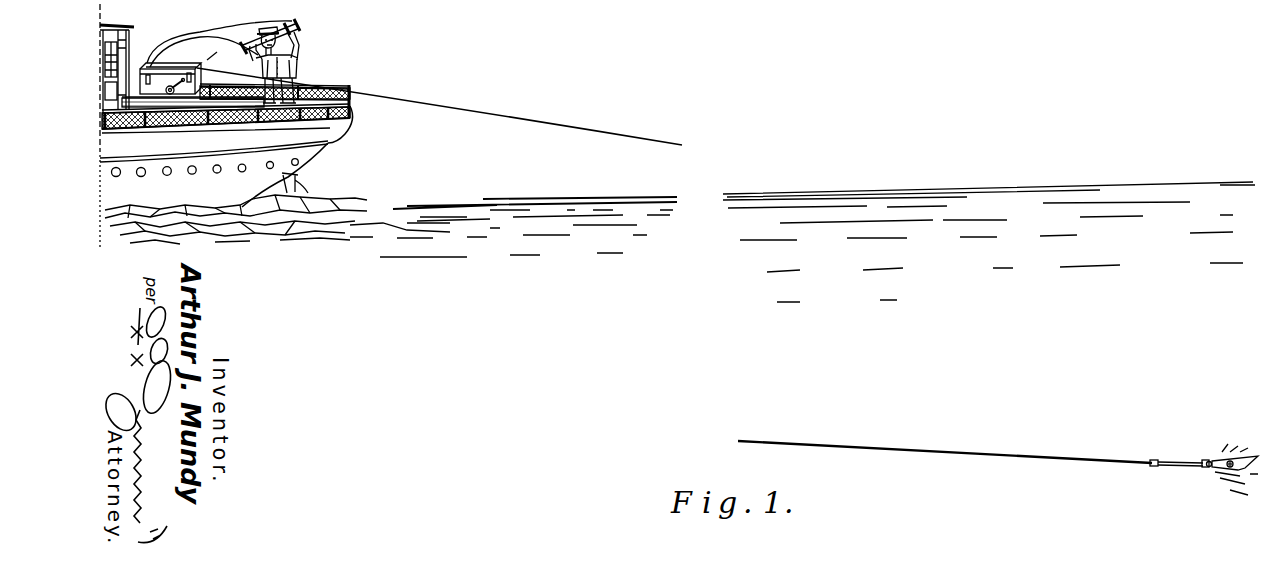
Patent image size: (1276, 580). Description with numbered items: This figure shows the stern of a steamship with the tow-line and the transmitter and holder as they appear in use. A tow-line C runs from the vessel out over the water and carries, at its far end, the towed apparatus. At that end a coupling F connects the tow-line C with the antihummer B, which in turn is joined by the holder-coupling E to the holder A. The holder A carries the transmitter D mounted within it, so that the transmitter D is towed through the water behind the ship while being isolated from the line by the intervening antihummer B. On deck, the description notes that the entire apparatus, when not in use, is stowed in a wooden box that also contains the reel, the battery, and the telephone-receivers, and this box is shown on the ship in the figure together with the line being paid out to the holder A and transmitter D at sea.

The holder A is at (1238, 460).
The antihummer B is at (1173, 462).
The tow-line C is at (1000, 454).
The transmitter D is at (1240, 455).
The holder-coupling E is at (1207, 461).
The coupling F is at (1153, 460).